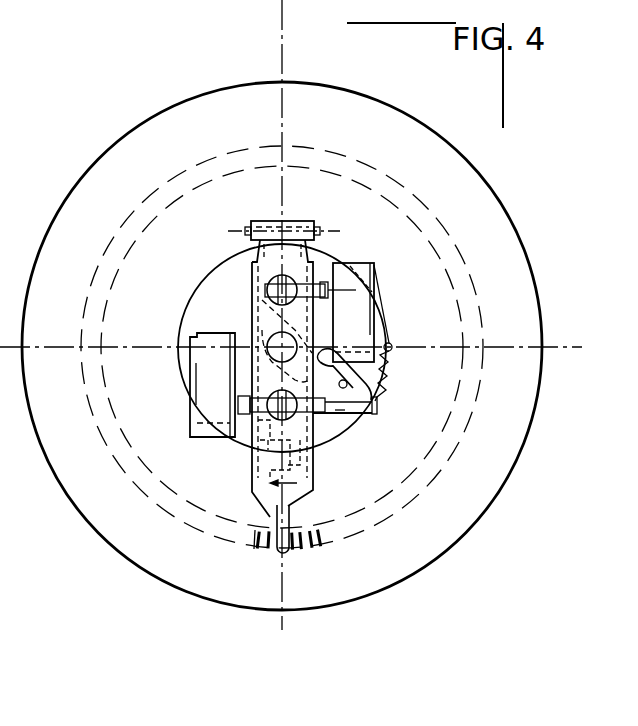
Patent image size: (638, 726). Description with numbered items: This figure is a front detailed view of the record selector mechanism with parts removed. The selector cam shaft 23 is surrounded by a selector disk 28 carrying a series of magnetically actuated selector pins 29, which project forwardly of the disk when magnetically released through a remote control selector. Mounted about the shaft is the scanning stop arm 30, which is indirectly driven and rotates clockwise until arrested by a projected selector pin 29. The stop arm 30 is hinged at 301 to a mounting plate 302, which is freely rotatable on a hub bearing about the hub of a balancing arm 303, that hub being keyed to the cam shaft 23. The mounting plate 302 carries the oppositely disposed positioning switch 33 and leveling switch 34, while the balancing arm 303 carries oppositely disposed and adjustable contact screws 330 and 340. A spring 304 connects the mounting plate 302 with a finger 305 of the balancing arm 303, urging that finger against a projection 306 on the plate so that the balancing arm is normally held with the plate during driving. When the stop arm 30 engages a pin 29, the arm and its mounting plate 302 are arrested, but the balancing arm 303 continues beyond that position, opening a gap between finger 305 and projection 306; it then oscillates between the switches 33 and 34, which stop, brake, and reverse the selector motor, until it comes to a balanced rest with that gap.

The selector disk 28 is at (107, 523).
The selector pins 29 is at (292, 545).
The scanning stop arm 30 is at (303, 467).
The selector cam shaft 23 is at (245, 337).
The hinge 301 is at (250, 230).
The mounting plate 302 is at (270, 337).
The balancing arm 303 is at (335, 412).
The spring 304 is at (377, 403).
The finger 305 is at (372, 405).
The projection 306 is at (362, 388).
The contact screw 330 is at (250, 408).
The contact screw 340 is at (315, 277).
The position switch 33 is at (215, 430).
The level switch 34 is at (370, 265).